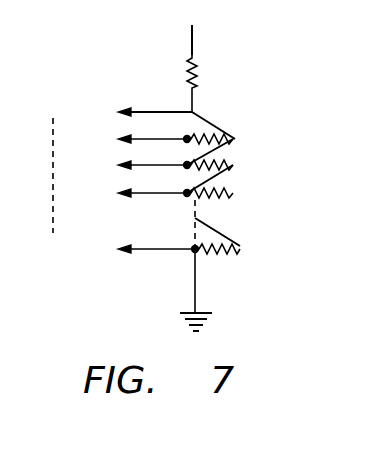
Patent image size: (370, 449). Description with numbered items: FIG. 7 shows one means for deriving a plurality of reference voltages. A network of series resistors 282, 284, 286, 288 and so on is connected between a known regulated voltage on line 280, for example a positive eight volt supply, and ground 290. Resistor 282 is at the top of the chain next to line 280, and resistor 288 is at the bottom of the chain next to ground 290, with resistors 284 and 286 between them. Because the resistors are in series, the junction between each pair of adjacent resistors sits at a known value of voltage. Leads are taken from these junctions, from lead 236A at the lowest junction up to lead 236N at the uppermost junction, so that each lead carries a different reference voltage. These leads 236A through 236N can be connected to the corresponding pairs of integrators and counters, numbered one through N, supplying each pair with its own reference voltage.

The line 280 is at (192, 40).
The series resistor 282 is at (195, 85).
The lead 236N is at (162, 111).
The series resistor 284 is at (230, 141).
The series resistor 286 is at (230, 168).
The series resistor 288 is at (236, 254).
The ground 290 is at (197, 293).
The lead 236A is at (165, 250).